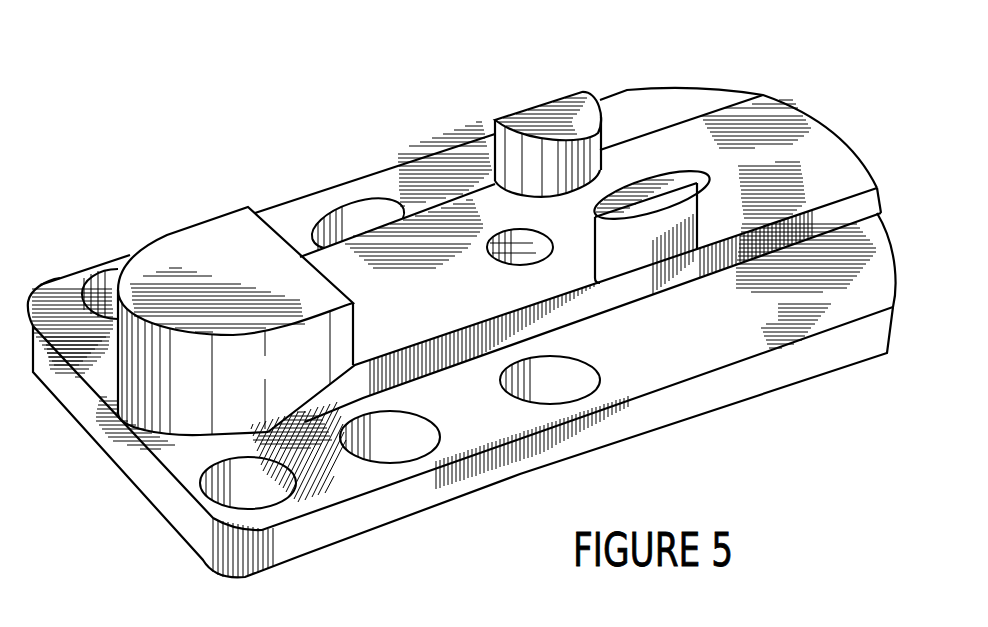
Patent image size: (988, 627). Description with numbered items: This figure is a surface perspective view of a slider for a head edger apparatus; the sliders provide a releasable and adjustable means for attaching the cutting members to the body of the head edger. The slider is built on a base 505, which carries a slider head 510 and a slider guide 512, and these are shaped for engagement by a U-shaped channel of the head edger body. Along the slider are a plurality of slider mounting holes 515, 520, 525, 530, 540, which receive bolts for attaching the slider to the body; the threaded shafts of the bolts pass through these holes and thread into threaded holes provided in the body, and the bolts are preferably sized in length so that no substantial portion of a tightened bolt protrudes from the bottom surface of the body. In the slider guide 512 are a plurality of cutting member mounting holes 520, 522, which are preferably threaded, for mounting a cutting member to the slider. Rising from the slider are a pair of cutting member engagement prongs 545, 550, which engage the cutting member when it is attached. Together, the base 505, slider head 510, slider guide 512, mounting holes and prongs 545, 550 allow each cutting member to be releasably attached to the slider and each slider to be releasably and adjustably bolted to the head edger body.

The base 505 is at (688, 352).
The slider head 510 is at (230, 230).
The slider guide 512 is at (452, 213).
The slider mounting hole 515 is at (570, 378).
The cutting member mounting hole 520 is at (400, 443).
The cutting member mounting hole 522 is at (500, 250).
The slider mounting hole 525 is at (250, 490).
The slider mounting hole 530 is at (363, 203).
The slider mounting hole 540 is at (92, 290).
The cutting member engagement prong 545 is at (582, 106).
The cutting member engagement prong 550 is at (652, 200).